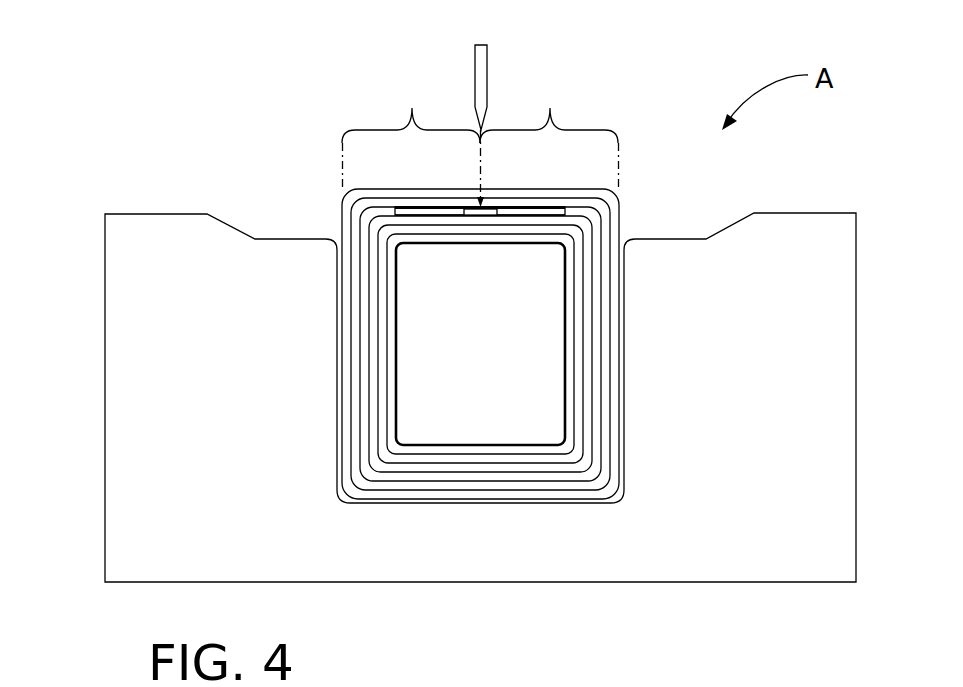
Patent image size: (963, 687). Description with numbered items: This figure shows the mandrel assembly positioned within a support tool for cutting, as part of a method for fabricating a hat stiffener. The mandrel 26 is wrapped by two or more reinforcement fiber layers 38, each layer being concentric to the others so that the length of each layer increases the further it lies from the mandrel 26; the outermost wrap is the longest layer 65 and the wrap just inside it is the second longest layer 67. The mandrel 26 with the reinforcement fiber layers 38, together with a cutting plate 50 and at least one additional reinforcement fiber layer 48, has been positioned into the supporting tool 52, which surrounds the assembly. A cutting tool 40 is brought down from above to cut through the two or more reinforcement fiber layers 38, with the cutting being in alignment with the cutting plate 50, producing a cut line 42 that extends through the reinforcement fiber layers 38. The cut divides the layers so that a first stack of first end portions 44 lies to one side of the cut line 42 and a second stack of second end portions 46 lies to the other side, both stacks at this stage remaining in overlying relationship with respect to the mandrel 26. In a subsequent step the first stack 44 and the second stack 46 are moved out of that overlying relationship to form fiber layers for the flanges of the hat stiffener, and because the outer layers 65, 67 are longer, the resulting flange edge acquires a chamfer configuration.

The mandrel 26 is at (400, 278).
The reinforcement fiber layers 38 is at (583, 199).
The cutting tool 40 is at (475, 70).
The cut line 42 is at (487, 166).
The first stack of first end portions 44 is at (412, 108).
The second stack of second end portions 46 is at (550, 108).
The additional reinforcement fiber layer 48 is at (547, 213).
The cutting plate 50 is at (422, 212).
The supporting tool 52 is at (155, 415).
The longest layer 65 is at (366, 173).
The second longest layer 67 is at (458, 197).